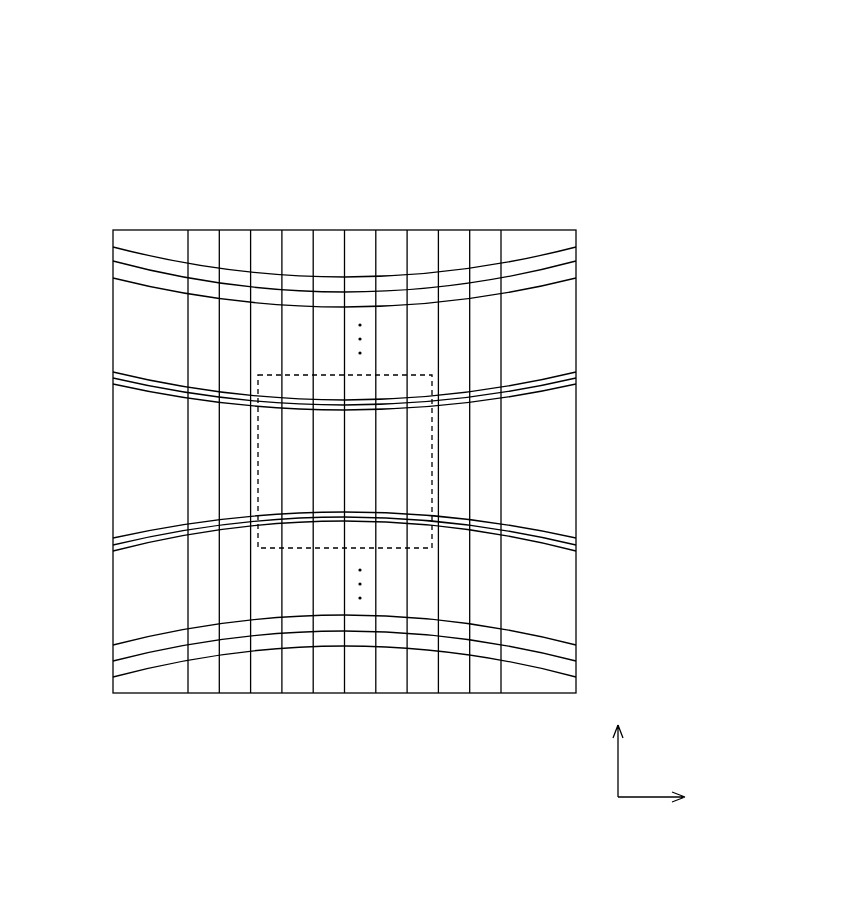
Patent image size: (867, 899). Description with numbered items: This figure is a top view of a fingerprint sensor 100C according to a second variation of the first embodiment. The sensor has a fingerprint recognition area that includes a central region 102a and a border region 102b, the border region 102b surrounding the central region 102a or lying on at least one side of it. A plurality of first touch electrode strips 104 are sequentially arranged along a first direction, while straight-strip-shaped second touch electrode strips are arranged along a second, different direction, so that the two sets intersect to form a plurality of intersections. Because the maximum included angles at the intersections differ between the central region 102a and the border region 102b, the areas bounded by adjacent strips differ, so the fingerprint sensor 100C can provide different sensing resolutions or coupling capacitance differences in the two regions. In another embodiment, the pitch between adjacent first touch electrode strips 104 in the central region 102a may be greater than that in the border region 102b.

The fingerprint sensor 100C is at (583, 70).
The central region 102a is at (413, 382).
The border region 102b is at (553, 295).
The first touch electrode strips 104 is at (119, 247).